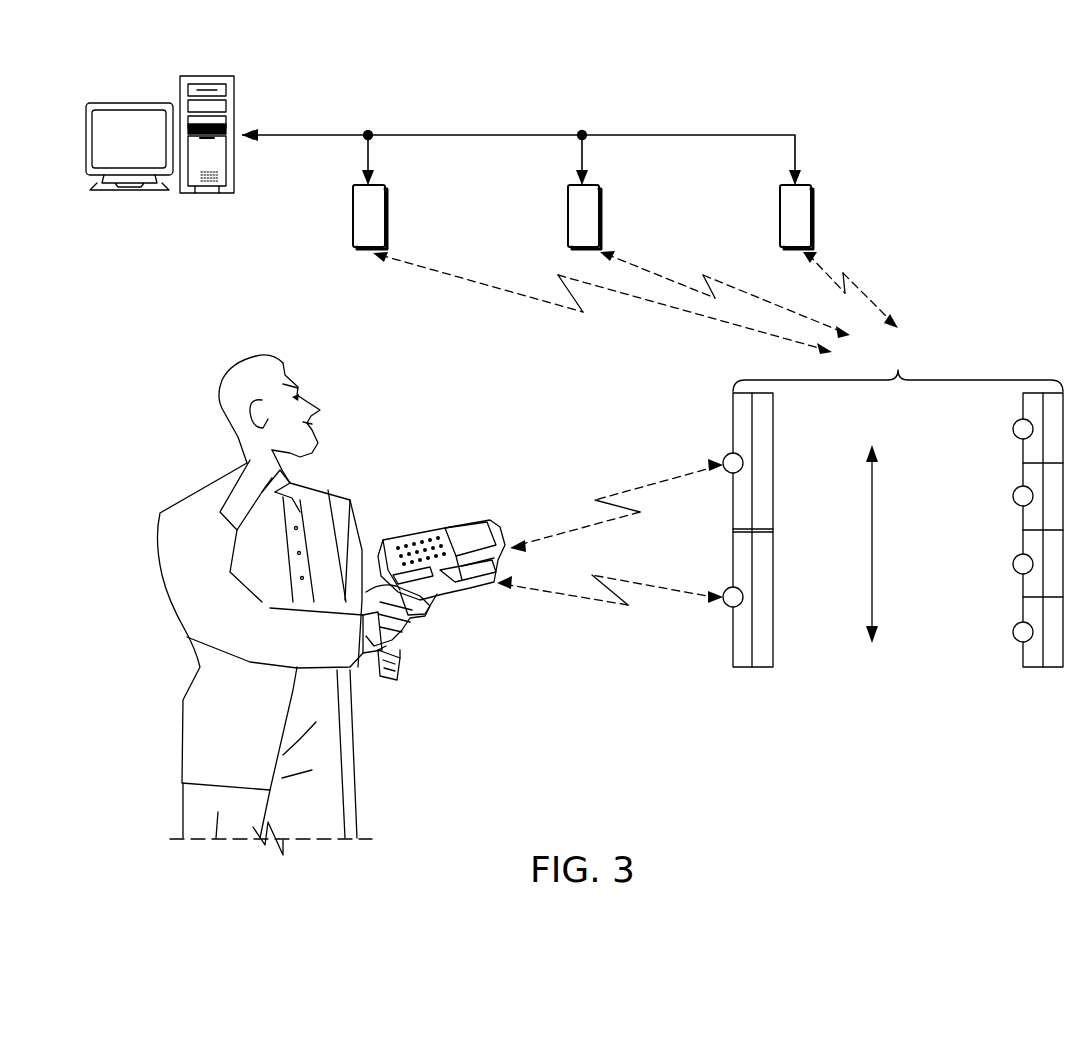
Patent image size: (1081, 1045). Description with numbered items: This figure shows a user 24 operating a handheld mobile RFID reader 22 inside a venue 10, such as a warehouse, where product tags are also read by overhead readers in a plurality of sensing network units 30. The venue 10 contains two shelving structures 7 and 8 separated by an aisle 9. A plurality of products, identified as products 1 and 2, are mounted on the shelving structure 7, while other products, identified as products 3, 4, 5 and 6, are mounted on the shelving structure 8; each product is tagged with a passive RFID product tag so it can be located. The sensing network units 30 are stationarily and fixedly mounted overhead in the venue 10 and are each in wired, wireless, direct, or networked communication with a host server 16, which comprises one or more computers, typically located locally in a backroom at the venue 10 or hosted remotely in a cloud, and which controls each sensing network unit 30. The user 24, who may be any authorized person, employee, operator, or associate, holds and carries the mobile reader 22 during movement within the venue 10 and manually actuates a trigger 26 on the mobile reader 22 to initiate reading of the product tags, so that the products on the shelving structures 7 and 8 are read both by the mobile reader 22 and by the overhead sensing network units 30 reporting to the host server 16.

The product 1 is at (727, 456).
The product 2 is at (724, 604).
The product 3 is at (1014, 422).
The product 4 is at (1014, 489).
The product 5 is at (1013, 571).
The product 6 is at (1013, 639).
The shelving structure 7 is at (762, 393).
The shelving structure 8 is at (1035, 393).
The aisle 9 is at (924, 558).
The venue 10 is at (964, 363).
The host server 16 is at (86, 142).
The mobile reader 22 is at (465, 596).
The user 24 is at (145, 558).
The trigger 26 is at (437, 592).
The sensing network unit 30 is at (780, 214).